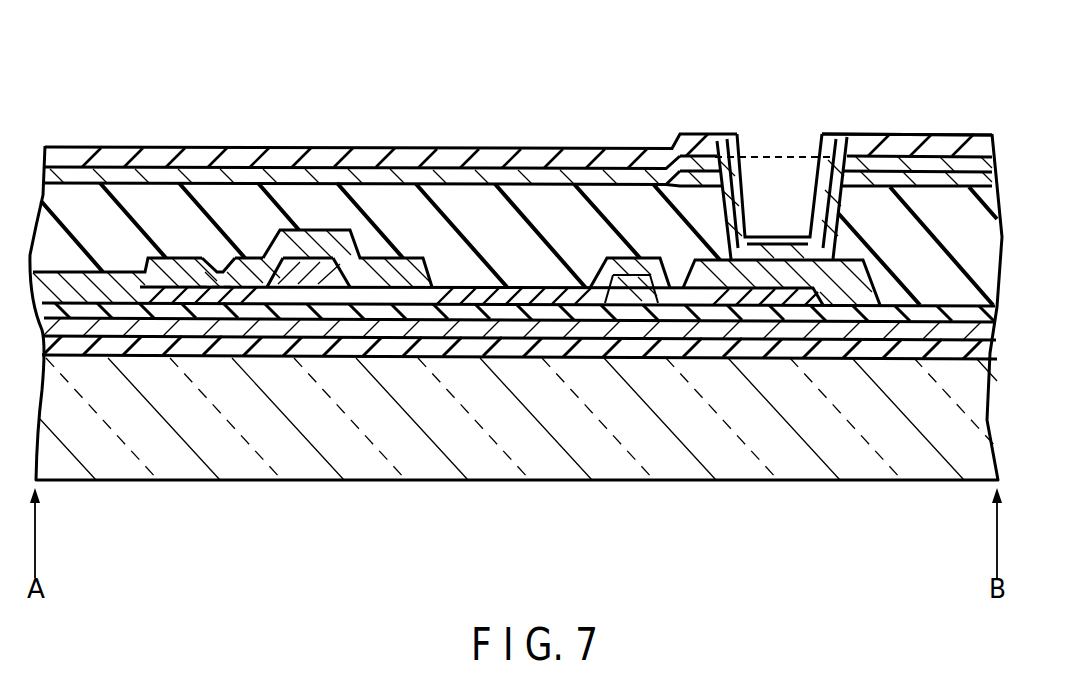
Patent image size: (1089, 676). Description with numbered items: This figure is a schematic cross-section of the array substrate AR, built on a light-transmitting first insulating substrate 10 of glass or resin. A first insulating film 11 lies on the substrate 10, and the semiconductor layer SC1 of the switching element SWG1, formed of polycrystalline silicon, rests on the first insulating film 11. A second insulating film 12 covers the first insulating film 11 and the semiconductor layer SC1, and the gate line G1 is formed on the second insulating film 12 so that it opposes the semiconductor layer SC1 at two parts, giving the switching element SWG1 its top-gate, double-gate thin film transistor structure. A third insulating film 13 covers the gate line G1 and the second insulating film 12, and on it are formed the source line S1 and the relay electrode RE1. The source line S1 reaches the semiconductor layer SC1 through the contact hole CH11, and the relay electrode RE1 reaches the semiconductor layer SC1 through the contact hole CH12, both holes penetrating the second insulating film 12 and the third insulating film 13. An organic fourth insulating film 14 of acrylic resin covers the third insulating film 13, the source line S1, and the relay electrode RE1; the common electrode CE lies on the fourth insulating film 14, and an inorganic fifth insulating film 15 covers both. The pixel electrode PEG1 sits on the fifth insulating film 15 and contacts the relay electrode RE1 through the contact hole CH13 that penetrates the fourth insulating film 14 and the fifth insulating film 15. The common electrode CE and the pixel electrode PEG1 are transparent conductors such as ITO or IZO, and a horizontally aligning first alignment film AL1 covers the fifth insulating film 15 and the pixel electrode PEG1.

The first insulating substrate 10 is at (988, 428).
The first insulating film 11 is at (975, 350).
The second insulating film 12 is at (980, 330).
The third insulating film 13 is at (980, 315).
The fourth insulating film 14 is at (993, 250).
The fifth insulating film 15 is at (990, 164).
The common electrode CE is at (985, 178).
The first alignment film AL1 is at (516, 147).
The pixel electrode PEG1 is at (942, 150).
The relay electrode RE1 is at (840, 270).
The contact hole CH11 is at (220, 268).
The contact hole CH12 is at (766, 290).
The contact hole CH13 is at (796, 146).
The gate line G1 is at (314, 283).
The source line S1 is at (177, 272).
The semiconductor layer SC1 is at (481, 327).
The switching element SWG1 is at (252, 372).
The array substrate AR is at (1008, 116).